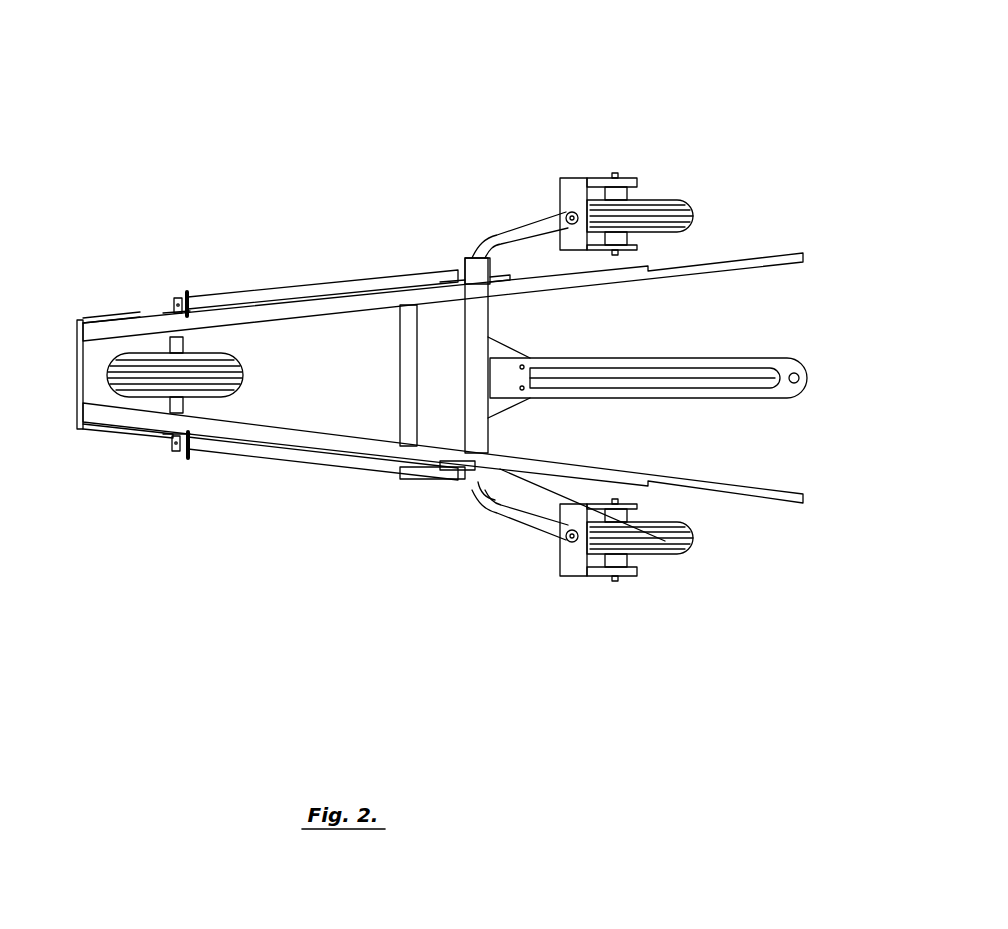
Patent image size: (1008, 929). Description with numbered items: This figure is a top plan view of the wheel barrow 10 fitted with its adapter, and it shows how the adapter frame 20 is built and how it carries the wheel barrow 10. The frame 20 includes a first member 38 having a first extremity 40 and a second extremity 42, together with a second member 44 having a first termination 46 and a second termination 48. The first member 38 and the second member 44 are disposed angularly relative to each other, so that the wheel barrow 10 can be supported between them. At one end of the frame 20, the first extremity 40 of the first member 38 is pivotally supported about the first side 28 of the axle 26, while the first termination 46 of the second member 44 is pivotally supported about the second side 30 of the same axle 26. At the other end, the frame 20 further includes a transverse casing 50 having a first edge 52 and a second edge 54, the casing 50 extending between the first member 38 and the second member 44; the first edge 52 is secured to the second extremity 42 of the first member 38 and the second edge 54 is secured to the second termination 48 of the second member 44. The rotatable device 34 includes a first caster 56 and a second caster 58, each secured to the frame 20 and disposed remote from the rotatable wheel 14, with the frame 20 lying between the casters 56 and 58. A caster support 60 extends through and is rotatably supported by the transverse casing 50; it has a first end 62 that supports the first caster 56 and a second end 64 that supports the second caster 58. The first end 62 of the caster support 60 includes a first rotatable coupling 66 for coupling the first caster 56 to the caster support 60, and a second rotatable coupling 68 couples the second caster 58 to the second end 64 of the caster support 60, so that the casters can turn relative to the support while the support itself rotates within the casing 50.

The wheel barrow 10 is at (347, 298).
The rotatable wheel 14 is at (213, 367).
The frame 20 is at (300, 470).
The axle 26 is at (183, 412).
The first side of the axle 28 is at (173, 438).
The second side of the axle 30 is at (173, 313).
The rotatable device 34 is at (688, 193).
The first member 38 is at (337, 463).
The first extremity 40 is at (190, 446).
The second extremity 42 is at (452, 480).
The second member 44 is at (283, 292).
The first termination 46 is at (193, 295).
The second termination 48 is at (457, 270).
The transverse casing 50 is at (505, 238).
The first edge 52 is at (625, 548).
The second edge 54 is at (490, 300).
The first caster 56 is at (648, 552).
The second caster 58 is at (592, 215).
The caster support 60 is at (500, 517).
The first end 62 is at (560, 534).
The second end 64 is at (555, 213).
The first rotatable coupling 66 is at (590, 577).
The second rotatable coupling 68 is at (572, 226).